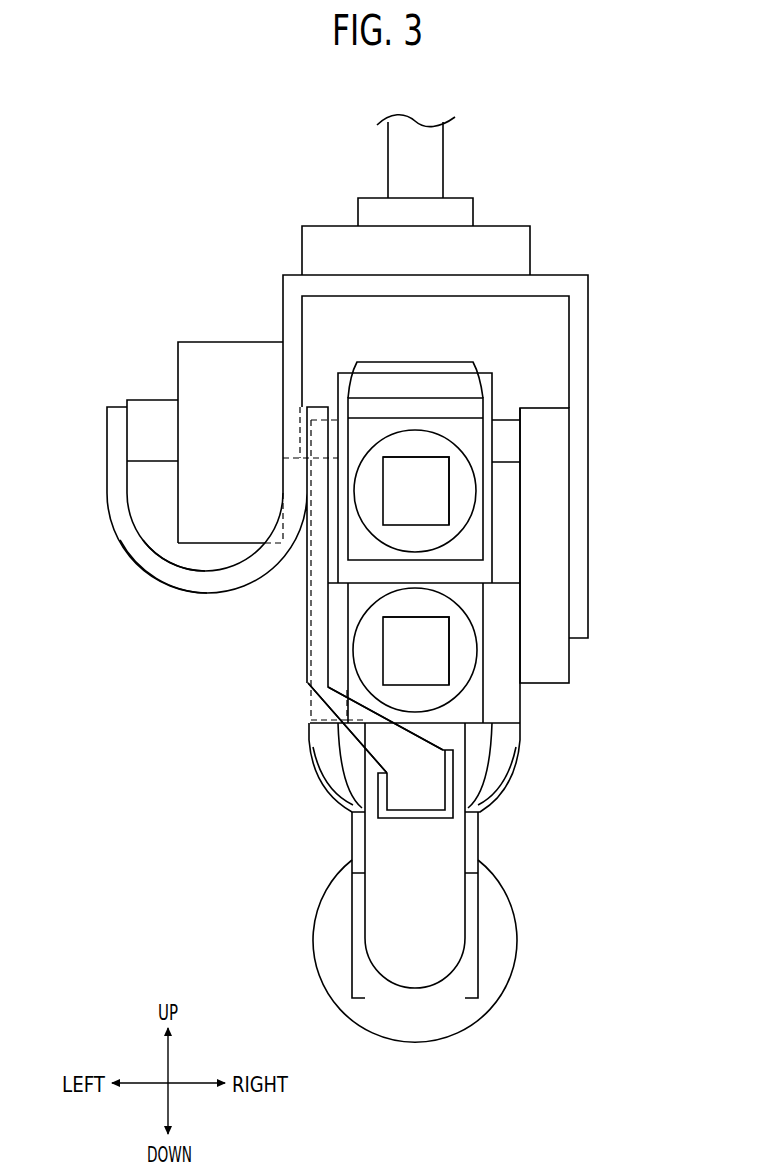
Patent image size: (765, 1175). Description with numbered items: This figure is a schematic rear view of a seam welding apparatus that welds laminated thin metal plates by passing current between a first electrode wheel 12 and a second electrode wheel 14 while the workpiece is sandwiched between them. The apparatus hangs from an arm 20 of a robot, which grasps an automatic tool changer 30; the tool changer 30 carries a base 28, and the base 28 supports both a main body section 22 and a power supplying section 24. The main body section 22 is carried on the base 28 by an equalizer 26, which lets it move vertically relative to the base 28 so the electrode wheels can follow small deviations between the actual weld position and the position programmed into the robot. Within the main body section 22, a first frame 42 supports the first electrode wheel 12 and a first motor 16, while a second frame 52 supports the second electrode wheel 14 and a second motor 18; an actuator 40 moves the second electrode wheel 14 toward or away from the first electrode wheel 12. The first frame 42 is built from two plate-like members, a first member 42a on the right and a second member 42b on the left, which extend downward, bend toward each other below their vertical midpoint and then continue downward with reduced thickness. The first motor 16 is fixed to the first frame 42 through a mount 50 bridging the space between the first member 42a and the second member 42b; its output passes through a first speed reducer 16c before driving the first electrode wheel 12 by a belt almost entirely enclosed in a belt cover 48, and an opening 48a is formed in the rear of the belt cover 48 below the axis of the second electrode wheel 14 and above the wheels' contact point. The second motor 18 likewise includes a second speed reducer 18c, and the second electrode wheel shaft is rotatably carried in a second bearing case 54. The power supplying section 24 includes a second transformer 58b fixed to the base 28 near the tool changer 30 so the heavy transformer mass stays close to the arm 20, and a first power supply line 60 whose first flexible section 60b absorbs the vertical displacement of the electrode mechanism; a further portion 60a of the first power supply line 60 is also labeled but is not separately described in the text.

The first electrode wheel 12 is at (513, 910).
The second electrode wheel 14 is at (517, 772).
The first motor 16 is at (398, 667).
The first speed reducer 16c is at (370, 632).
The second motor 18 is at (433, 487).
The second speed reducer 18c is at (440, 452).
The arm 20 is at (427, 157).
The main body section 22 is at (262, 842).
The power supplying section 24 is at (200, 332).
The equalizer 26 is at (540, 552).
The base 28 is at (578, 323).
The automatic tool changer 30 is at (515, 247).
The actuator 40 is at (483, 378).
The first frame 42 is at (350, 744).
The first member 42a is at (500, 735).
The second member 42b is at (345, 757).
The belt cover 48 is at (369, 860).
The opening 48a is at (417, 820).
The mount 50 is at (502, 655).
The second frame 52 is at (383, 358).
The second bearing case 54 is at (420, 450).
The second transformer 58b is at (232, 357).
The first power supply line 60 is at (181, 515).
The bracket upper portion 60a is at (146, 417).
The first flexible section 60b is at (132, 540).